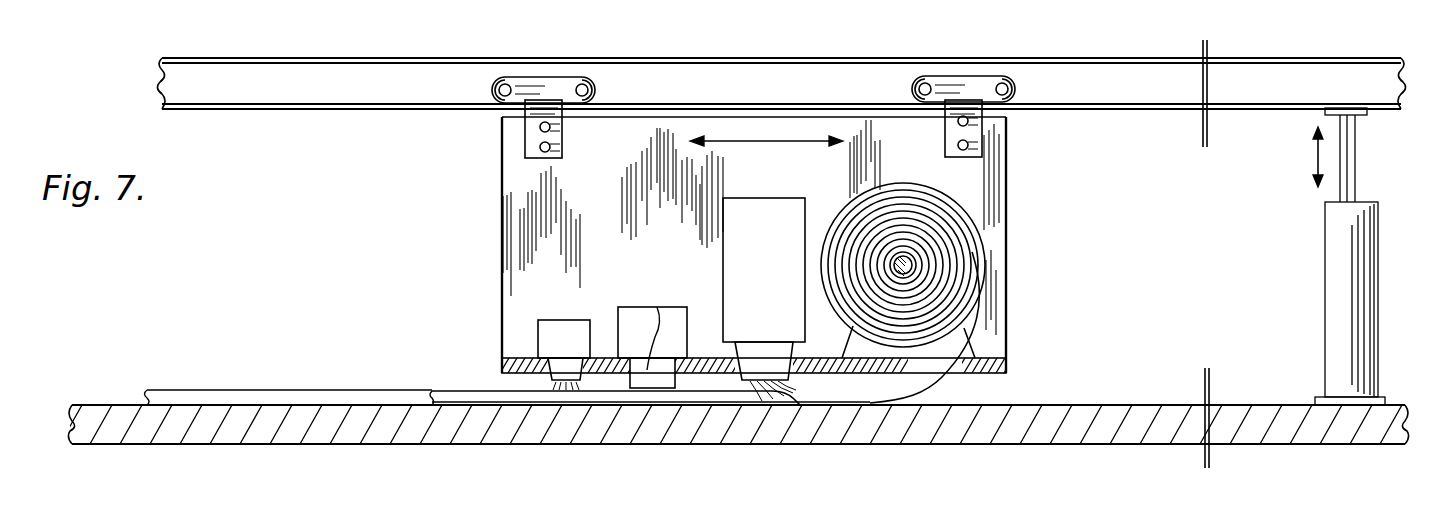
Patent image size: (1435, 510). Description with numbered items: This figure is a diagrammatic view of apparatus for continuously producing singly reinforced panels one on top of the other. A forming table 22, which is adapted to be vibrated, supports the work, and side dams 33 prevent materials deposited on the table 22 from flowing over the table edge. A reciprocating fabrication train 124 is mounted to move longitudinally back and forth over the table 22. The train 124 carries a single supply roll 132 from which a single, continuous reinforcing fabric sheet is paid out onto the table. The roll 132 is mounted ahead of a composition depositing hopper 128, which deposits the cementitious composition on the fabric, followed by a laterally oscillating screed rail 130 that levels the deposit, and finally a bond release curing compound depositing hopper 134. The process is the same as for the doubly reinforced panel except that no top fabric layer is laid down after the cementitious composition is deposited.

The forming table 22 is at (343, 432).
The side dams 33 is at (293, 393).
The reciprocating fabrication train 124 is at (1018, 197).
The composition depositing hopper 128 is at (781, 205).
The laterally oscillating screed rail 130 is at (657, 307).
The single supply roll 132 is at (974, 258).
The bond release curing compound depositing hopper 134 is at (560, 322).